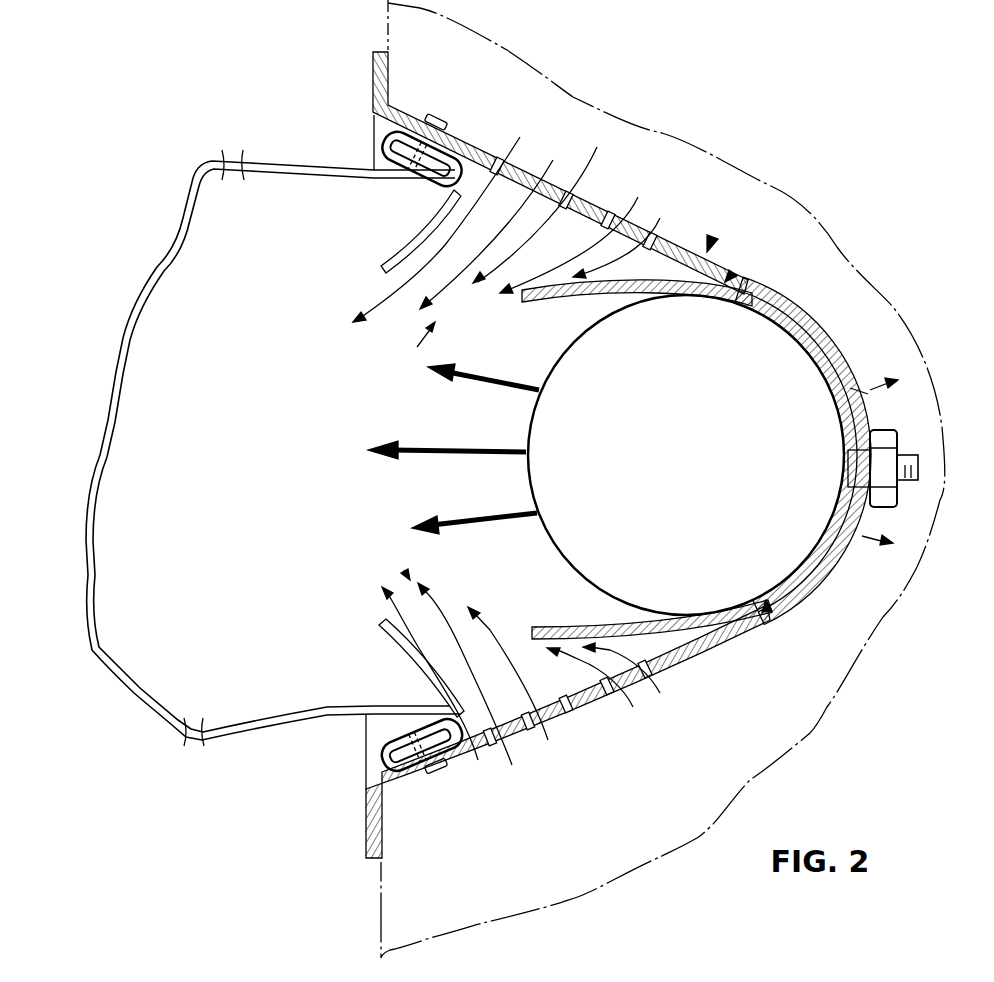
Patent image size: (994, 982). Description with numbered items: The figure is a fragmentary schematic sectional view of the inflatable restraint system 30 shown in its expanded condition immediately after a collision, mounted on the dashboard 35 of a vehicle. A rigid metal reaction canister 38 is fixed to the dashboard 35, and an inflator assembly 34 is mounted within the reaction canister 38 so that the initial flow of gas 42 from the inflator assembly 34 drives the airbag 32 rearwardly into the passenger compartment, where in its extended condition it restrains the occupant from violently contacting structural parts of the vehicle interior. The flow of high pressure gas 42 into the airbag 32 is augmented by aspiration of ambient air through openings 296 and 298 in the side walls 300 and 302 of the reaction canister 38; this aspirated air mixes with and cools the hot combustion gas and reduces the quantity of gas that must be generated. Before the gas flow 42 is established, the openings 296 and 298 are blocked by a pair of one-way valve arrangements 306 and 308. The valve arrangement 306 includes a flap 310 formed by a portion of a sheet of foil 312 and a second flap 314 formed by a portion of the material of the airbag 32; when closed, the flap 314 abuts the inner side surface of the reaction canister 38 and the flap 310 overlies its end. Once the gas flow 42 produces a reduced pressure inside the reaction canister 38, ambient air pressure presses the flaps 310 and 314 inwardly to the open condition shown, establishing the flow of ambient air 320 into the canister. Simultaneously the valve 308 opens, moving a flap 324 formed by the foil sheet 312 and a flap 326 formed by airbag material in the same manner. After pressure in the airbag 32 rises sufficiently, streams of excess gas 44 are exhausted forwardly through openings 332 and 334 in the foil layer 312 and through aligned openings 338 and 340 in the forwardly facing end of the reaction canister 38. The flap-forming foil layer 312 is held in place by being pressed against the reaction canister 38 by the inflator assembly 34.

The inflatable restraint system 30 is at (695, 192).
The airbag 32 is at (132, 697).
The inflator assembly 34 is at (768, 612).
The dashboard 35 is at (380, 915).
The reaction canister 38 is at (710, 240).
The flow of gas 42 is at (500, 512).
The streams of excess gas 44 is at (870, 390).
The openings 296 is at (660, 235).
The openings 298 is at (633, 703).
The side wall 300 is at (473, 150).
The side wall 302 is at (464, 758).
The one-way valve arrangement 306 is at (417, 347).
The one-way valve arrangement 308 is at (404, 570).
The flap 310 is at (558, 298).
The sheet of foil 312 is at (733, 277).
The flap 314 is at (423, 228).
The flow of ambient air 320 is at (583, 180).
The flap 324 is at (578, 633).
The flap 326 is at (418, 660).
The opening 332 is at (843, 408).
The opening 334 is at (838, 548).
The opening 338 is at (857, 398).
The opening 340 is at (853, 523).